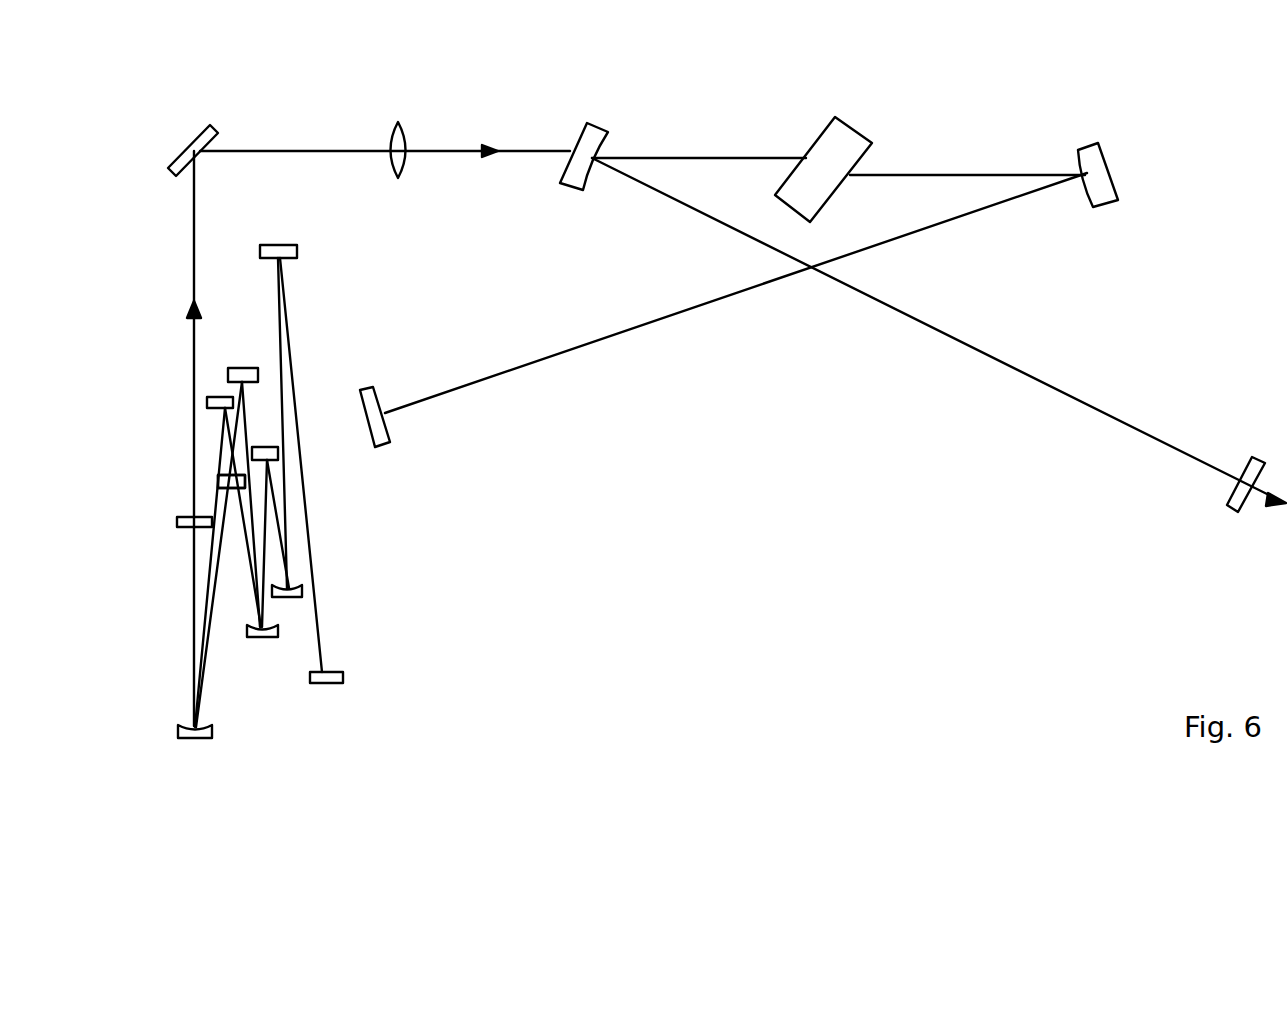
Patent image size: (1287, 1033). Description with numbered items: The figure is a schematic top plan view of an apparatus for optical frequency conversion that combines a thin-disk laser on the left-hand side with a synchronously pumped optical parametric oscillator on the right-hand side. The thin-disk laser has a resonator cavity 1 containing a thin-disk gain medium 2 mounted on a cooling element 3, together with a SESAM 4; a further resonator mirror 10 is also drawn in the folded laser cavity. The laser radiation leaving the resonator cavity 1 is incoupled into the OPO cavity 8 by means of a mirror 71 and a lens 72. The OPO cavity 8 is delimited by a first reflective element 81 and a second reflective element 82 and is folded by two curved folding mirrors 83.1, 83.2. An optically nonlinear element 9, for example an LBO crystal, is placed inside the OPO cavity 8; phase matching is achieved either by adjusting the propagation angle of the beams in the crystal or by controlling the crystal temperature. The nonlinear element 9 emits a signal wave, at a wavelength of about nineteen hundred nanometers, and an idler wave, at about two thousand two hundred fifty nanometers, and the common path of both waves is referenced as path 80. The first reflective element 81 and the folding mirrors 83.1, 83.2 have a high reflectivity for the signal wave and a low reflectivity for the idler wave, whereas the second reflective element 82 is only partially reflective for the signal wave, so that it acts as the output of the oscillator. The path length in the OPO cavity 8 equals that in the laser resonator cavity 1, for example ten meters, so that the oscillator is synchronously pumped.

The resonator cavity 1 is at (286, 491).
The thin-disk gain medium 2 is at (238, 490).
The cooling element 3 is at (225, 492).
The SESAM 4 is at (323, 670).
The OPO cavity 8 is at (812, 362).
The optically nonlinear element 9 is at (830, 148).
The resonator mirror 10 is at (287, 325).
The mirror 71 is at (201, 133).
The lens 72 is at (397, 142).
The common path of signal and idler wave 80 is at (950, 222).
The first reflective element 81 is at (385, 425).
The second reflective element 82 is at (1235, 497).
The folding mirror 83.1 is at (598, 133).
The folding mirror 83.2 is at (1093, 155).